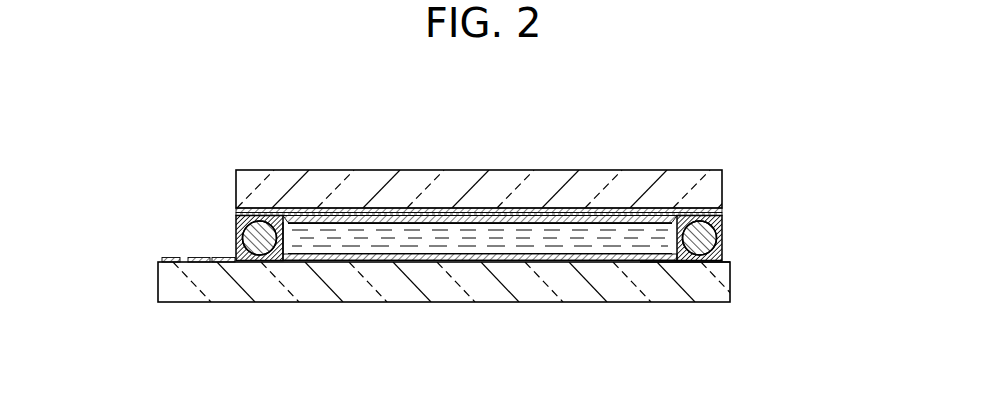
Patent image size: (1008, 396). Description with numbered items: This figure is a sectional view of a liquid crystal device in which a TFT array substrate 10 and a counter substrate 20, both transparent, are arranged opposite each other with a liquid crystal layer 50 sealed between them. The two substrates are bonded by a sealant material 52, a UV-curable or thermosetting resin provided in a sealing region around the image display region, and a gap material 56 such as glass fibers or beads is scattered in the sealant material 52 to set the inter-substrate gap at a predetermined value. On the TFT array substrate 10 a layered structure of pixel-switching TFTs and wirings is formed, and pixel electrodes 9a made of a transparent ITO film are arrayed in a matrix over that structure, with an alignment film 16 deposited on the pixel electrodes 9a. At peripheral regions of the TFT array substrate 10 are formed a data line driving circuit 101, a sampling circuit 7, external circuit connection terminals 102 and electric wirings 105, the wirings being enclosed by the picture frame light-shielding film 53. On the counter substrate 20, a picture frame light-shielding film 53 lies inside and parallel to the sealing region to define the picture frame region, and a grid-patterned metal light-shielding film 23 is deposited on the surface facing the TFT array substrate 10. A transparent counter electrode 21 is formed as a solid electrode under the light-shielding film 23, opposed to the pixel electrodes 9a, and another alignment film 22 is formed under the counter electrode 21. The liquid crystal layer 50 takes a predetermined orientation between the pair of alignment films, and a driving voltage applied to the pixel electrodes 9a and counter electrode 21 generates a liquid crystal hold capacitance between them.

The TFT array substrate 10 is at (512, 290).
The counter substrate 20 is at (372, 180).
The counter electrode 21 is at (602, 213).
The alignment film 22 is at (549, 222).
The light-shielding film 23 is at (464, 216).
The liquid crystal layer 50 is at (432, 240).
The sealant material 52 is at (236, 245).
The picture frame light-shielding film 53 is at (297, 213).
The gap material 56 is at (259, 256).
The sampling circuit 7 is at (286, 248).
The pixel electrode 9a is at (340, 258).
The alignment film 16 is at (572, 246).
The data line driving circuit 101 is at (213, 261).
The external circuit connection terminal 102 is at (172, 263).
The electric wiring 105 is at (663, 262).